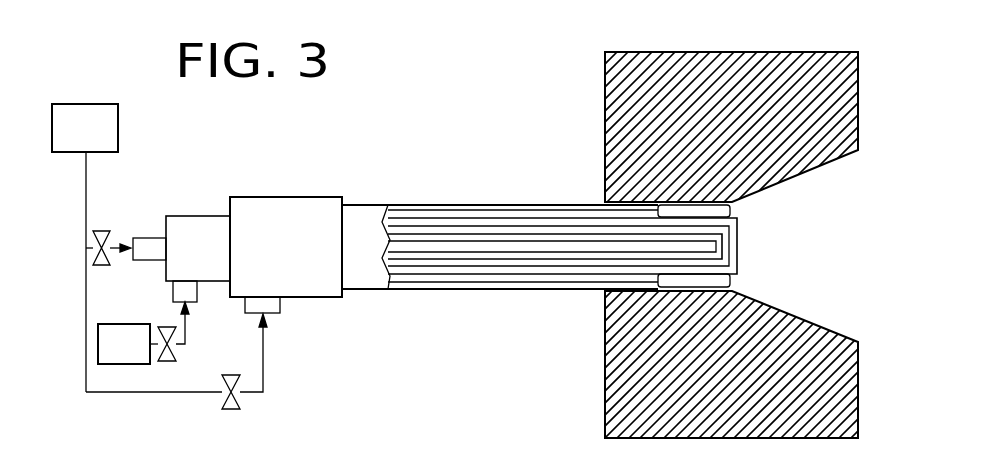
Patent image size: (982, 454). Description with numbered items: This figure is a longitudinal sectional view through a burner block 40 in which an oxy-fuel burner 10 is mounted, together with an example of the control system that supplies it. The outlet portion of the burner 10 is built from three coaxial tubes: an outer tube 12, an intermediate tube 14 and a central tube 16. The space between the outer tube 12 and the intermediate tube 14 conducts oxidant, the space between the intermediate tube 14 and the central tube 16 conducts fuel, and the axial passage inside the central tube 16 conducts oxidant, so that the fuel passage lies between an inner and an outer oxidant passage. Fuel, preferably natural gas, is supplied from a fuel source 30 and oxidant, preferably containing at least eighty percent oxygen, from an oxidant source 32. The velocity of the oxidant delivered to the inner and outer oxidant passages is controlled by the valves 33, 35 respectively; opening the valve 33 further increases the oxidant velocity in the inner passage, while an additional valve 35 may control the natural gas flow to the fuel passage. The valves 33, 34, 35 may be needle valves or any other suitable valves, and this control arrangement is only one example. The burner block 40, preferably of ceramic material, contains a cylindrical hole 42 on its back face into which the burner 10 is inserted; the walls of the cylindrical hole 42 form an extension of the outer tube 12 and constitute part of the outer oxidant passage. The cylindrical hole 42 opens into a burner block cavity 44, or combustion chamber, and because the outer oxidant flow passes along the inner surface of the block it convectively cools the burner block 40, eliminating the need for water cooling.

The oxy-fuel burner 10 is at (419, 160).
The outer tube 12 is at (543, 205).
The intermediate tube 14 is at (502, 225).
The central tube 16 is at (456, 240).
The fuel source 30 is at (128, 344).
The oxidant source 32 is at (137, 248).
The valve 33 is at (105, 232).
The valve 34 is at (241, 404).
The valve 35 is at (178, 362).
The burner block 40 is at (677, 40).
The cylindrical hole 42 is at (620, 289).
The burner block cavity 44 is at (813, 255).